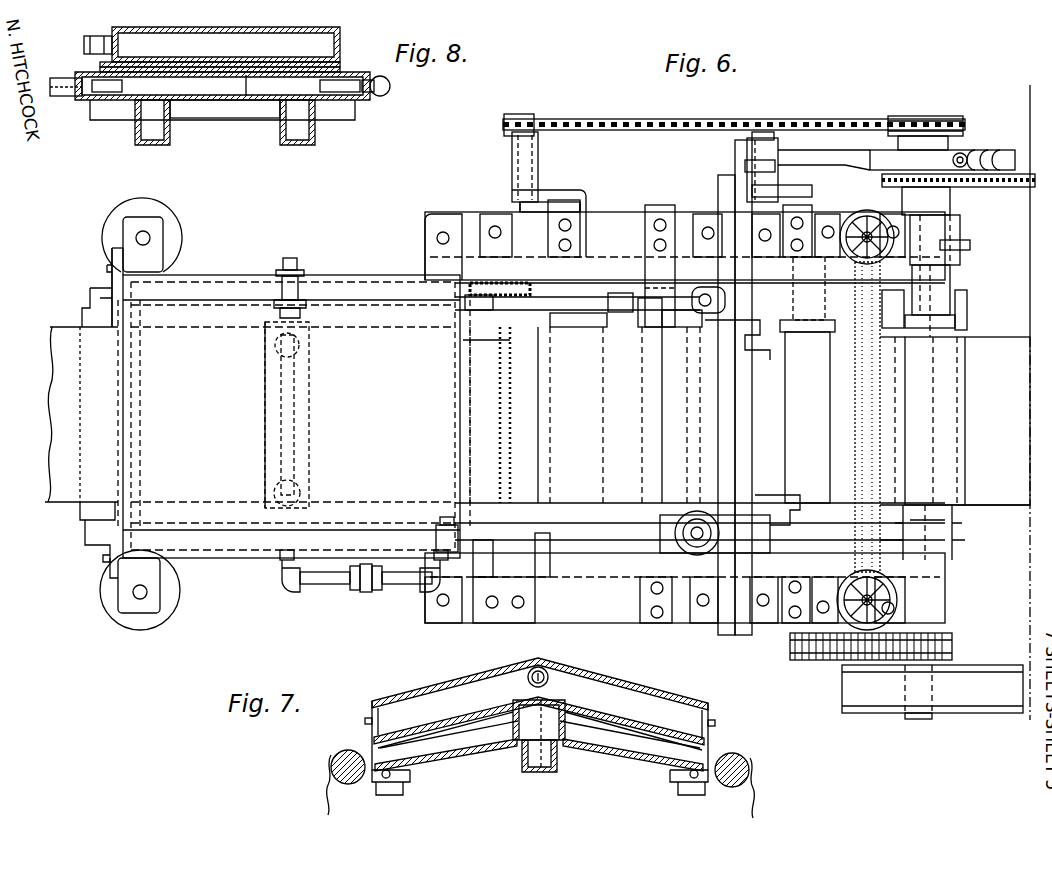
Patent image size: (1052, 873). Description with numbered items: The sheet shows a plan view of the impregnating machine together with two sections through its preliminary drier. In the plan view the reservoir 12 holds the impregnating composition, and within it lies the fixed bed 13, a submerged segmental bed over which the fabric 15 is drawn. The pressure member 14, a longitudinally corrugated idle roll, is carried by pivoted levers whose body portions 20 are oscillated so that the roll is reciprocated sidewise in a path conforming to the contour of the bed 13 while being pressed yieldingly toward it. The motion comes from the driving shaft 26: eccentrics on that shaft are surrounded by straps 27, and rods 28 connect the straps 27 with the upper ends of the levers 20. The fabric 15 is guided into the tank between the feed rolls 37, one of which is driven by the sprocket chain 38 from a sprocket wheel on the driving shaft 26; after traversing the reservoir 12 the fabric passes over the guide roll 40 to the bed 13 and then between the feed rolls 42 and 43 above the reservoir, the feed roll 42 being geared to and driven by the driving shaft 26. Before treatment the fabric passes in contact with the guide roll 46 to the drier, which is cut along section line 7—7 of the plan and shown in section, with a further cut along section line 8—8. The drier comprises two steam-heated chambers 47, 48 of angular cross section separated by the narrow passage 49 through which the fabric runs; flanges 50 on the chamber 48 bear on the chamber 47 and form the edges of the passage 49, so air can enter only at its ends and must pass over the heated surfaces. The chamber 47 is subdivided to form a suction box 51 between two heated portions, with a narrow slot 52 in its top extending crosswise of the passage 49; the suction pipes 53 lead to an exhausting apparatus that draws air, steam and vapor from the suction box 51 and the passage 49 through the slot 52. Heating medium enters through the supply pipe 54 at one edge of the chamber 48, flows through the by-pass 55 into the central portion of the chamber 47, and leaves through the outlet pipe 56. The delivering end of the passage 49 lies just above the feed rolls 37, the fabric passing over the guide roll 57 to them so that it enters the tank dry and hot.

In FIG. 6, the section line 7 is at (95, 340).
In FIG. 7, the section line 8 is at (539, 656).
In FIG. 6, the reservoir 12 is at (960, 550).
In FIG. 6, the fixed bed 13 is at (778, 440).
In FIG. 6, the pressure member 14 is at (712, 435).
In FIG. 7, the fabric 15 is at (326, 790).
In FIG. 6, the lever body portion 20 is at (750, 330).
In FIG. 6, the driving shaft 26 is at (916, 120).
In FIG. 6, the straps 27 is at (990, 152).
In FIG. 6, the rods 28 is at (832, 160).
In FIG. 6, the feed rolls 37 is at (522, 495).
In FIG. 6, the sprocket chain 38 is at (840, 120).
In FIG. 6, the guide roll 40 is at (606, 322).
In FIG. 6, the feed roll 42 is at (880, 327).
In FIG. 6, the feed roll 43 is at (905, 315).
In FIG. 6, the guide roll 46 is at (75, 512).
In FIG. 7, the guide roll 46 is at (342, 782).
In FIG. 6, the drier chamber 47 is at (385, 285).
In FIG. 8, the drier chamber 47 is at (366, 110).
In FIG. 7, the drier chamber 47 is at (460, 745).
In FIG. 6, the drier chamber 48 is at (202, 300).
In FIG. 8, the drier chamber 48 is at (345, 38).
In FIG. 7, the drier chamber 48 is at (450, 685).
In FIG. 8, the passage 49 is at (340, 55).
In FIG. 7, the passage 49 is at (372, 738).
In FIG. 8, the flanges 50 is at (112, 66).
In FIG. 6, the suction box 51 is at (310, 378).
In FIG. 8, the suction box 51 is at (225, 123).
In FIG. 7, the suction box 51 is at (565, 727).
In FIG. 6, the slot 52 is at (310, 405).
In FIG. 8, the slot 52 is at (246, 75).
In FIG. 7, the slot 52 is at (528, 772).
In FIG. 8, the suction pipes 53 is at (153, 132).
In FIG. 7, the suction pipes 53 is at (552, 772).
In FIG. 6, the supply pipe 54 is at (280, 291).
In FIG. 8, the supply pipe 54 is at (95, 40).
In FIG. 6, the by-pass 55 is at (336, 580).
In FIG. 8, the by-pass 55 is at (390, 88).
In FIG. 6, the outlet pipe 56 is at (300, 262).
In FIG. 8, the outlet pipe 56 is at (58, 92).
In FIG. 6, the guide roll 57 is at (460, 500).
In FIG. 7, the guide roll 57 is at (750, 770).